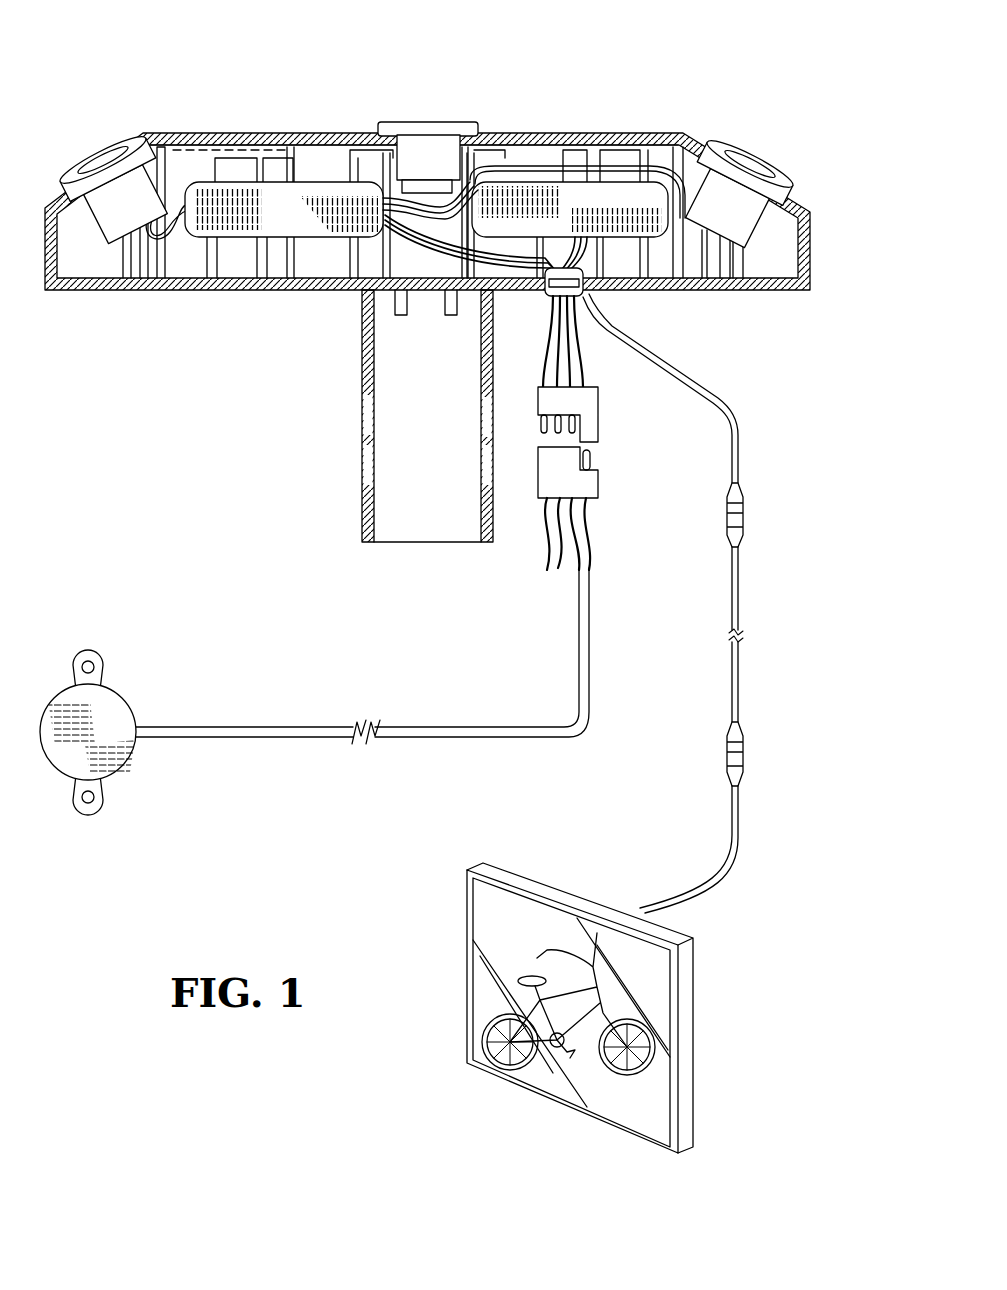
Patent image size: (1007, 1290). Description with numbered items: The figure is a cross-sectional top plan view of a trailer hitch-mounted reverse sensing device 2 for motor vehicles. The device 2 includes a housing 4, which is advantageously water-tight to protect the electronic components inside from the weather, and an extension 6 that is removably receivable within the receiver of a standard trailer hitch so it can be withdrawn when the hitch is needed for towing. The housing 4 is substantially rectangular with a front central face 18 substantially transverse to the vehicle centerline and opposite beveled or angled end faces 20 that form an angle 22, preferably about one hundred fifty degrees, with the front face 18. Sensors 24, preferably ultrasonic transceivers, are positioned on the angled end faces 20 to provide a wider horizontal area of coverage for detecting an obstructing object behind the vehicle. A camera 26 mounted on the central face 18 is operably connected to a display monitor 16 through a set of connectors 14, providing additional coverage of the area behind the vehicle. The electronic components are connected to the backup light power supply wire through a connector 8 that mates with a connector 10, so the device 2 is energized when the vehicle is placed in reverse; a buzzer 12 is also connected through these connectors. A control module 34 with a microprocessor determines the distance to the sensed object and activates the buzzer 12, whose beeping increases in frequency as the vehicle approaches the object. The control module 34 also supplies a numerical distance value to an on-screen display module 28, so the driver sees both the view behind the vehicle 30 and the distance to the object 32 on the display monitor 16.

The reverse sensing device 2 is at (428, 198).
The housing 4 is at (187, 296).
The extension 6 is at (356, 507).
The connector 8 is at (600, 410).
The mating connector 10 is at (600, 482).
The buzzer 12 is at (127, 698).
The connectors 14 is at (745, 512).
The display monitor 16 is at (582, 1008).
The front central face 18 is at (305, 132).
The angled end faces 20 is at (163, 152).
The angle 22 is at (180, 150).
The sensors 24 is at (80, 135).
The camera 26 is at (430, 122).
The on-screen display module 28 is at (558, 190).
The view behind the vehicle 30 is at (503, 1077).
The distance indication 32 is at (478, 903).
The control module 34 is at (272, 238).